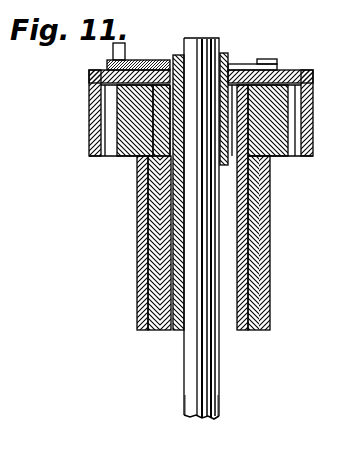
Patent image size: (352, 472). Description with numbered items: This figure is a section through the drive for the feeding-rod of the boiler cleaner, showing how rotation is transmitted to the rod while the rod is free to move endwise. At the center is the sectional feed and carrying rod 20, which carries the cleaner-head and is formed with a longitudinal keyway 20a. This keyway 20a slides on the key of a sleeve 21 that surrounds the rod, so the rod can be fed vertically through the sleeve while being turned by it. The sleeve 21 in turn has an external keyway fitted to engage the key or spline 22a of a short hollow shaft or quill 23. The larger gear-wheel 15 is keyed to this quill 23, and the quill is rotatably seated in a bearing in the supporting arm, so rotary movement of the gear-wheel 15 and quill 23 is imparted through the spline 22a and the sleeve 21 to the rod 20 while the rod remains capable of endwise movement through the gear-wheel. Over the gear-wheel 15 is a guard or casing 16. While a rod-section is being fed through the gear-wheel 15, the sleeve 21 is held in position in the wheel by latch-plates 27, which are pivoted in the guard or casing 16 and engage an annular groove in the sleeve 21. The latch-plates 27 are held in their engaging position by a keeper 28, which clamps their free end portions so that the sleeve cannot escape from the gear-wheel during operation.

The gear-wheel 15 is at (277, 110).
The guard or casing 16 is at (297, 70).
The sectional feed and carrying rod 20 is at (216, 47).
The longitudinal keyway 20a is at (203, 340).
The sleeve 21 is at (180, 213).
The key or spline 22a is at (232, 207).
The short hollow shaft or quill 23 is at (162, 252).
The latch-plates 27 is at (244, 64).
The keeper 28 is at (131, 61).